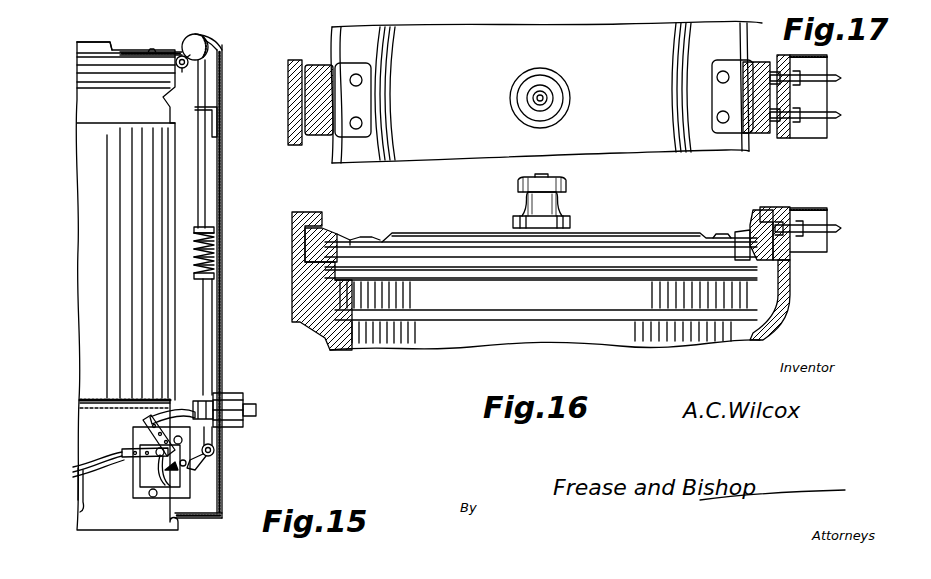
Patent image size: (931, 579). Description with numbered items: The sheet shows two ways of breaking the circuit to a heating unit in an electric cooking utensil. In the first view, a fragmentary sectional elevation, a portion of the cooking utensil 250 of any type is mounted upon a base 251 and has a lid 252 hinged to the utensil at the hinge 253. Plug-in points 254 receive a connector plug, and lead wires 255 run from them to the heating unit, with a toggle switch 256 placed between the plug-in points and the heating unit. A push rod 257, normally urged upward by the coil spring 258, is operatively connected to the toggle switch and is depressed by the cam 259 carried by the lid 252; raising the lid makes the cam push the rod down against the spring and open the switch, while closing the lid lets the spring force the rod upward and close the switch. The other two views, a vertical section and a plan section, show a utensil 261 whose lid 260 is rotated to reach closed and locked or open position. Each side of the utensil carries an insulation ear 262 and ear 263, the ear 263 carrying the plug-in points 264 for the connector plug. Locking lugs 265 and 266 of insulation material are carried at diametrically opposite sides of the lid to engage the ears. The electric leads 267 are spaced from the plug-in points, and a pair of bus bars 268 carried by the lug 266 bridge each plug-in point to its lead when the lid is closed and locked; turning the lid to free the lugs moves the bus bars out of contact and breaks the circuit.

In FIG. 15, the cooking utensil 250 is at (80, 238).
In FIG. 15, the base 251 is at (88, 425).
In FIG. 15, the lid 252 is at (88, 45).
In FIG. 15, the hinge 253 is at (184, 52).
In FIG. 15, the plug-in points 254 is at (250, 405).
In FIG. 15, the lead wires 255 is at (88, 487).
In FIG. 15, the toggle switch 256 is at (195, 461).
In FIG. 15, the push rod 257 is at (205, 181).
In FIG. 15, the coil spring 258 is at (214, 262).
In FIG. 15, the cam 259 is at (210, 45).
In FIG. 17, the lid 260 is at (546, 92).
In FIG. 16, the lid 260 is at (632, 236).
In FIG. 16, the utensil 261 is at (390, 340).
In FIG. 17, the insulation ear 262 is at (283, 62).
In FIG. 16, the insulation ear 262 is at (284, 214).
In FIG. 17, the insulation ear 263 is at (785, 140).
In FIG. 16, the insulation ear 263 is at (785, 210).
In FIG. 17, the plug-in points 264 is at (838, 110).
In FIG. 16, the plug-in points 264 is at (830, 225).
In FIG. 17, the locking lug 265 is at (338, 67).
In FIG. 16, the locking lug 265 is at (335, 232).
In FIG. 17, the locking lug 266 is at (768, 89).
In FIG. 16, the locking lug 266 is at (756, 215).
In FIG. 16, the electric leads 267 is at (785, 320).
In FIG. 17, the bus bars 268 is at (770, 117).
In FIG. 16, the bus bars 268 is at (752, 235).